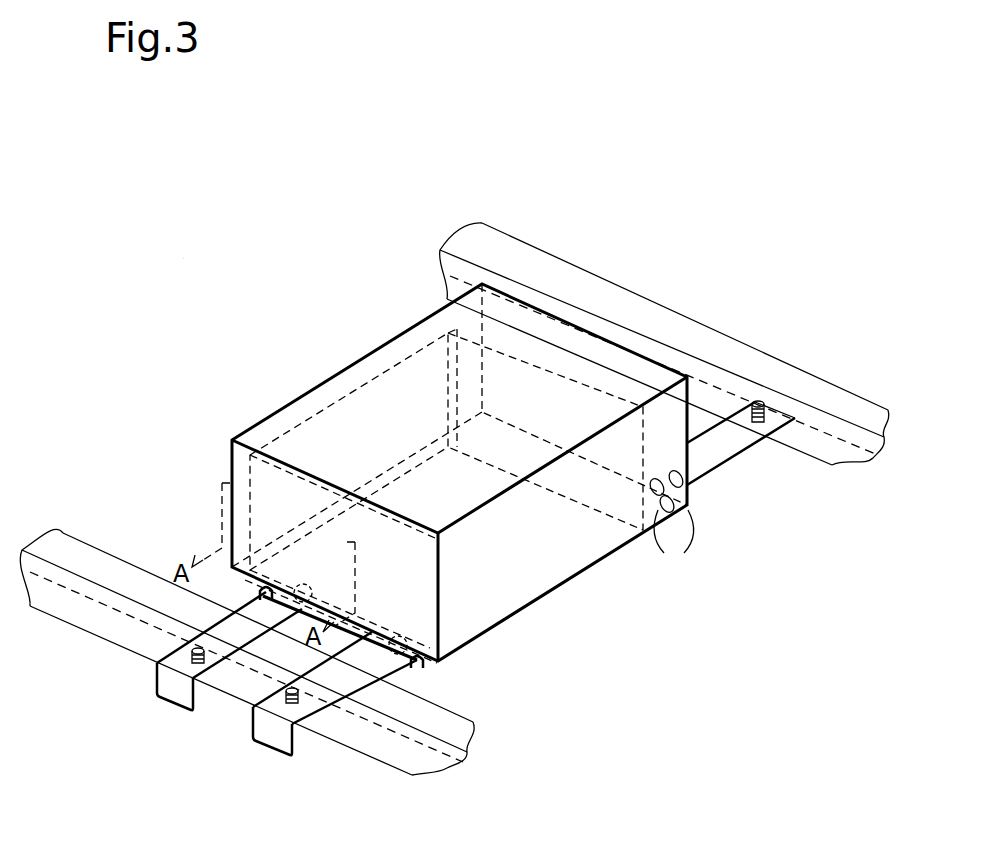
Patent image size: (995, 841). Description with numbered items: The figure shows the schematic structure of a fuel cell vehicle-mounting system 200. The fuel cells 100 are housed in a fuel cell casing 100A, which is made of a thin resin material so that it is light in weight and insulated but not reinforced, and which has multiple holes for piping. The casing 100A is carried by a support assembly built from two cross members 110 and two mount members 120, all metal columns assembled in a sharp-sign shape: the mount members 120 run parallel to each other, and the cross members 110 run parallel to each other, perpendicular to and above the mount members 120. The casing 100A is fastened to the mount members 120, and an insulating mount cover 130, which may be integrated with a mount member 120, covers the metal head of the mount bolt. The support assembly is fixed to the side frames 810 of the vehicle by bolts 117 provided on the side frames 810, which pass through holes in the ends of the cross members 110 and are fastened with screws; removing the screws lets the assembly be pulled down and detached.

The fuel cell vehicle-mounting system 200 is at (183, 258).
The fuel cells 100 is at (343, 395).
The fuel cell casing 100A is at (286, 408).
The cross members 110 is at (167, 710).
The bolts 117 is at (175, 652).
The mount members 120 is at (433, 668).
The mount cover 130 is at (292, 603).
The side frames 810 is at (873, 458).